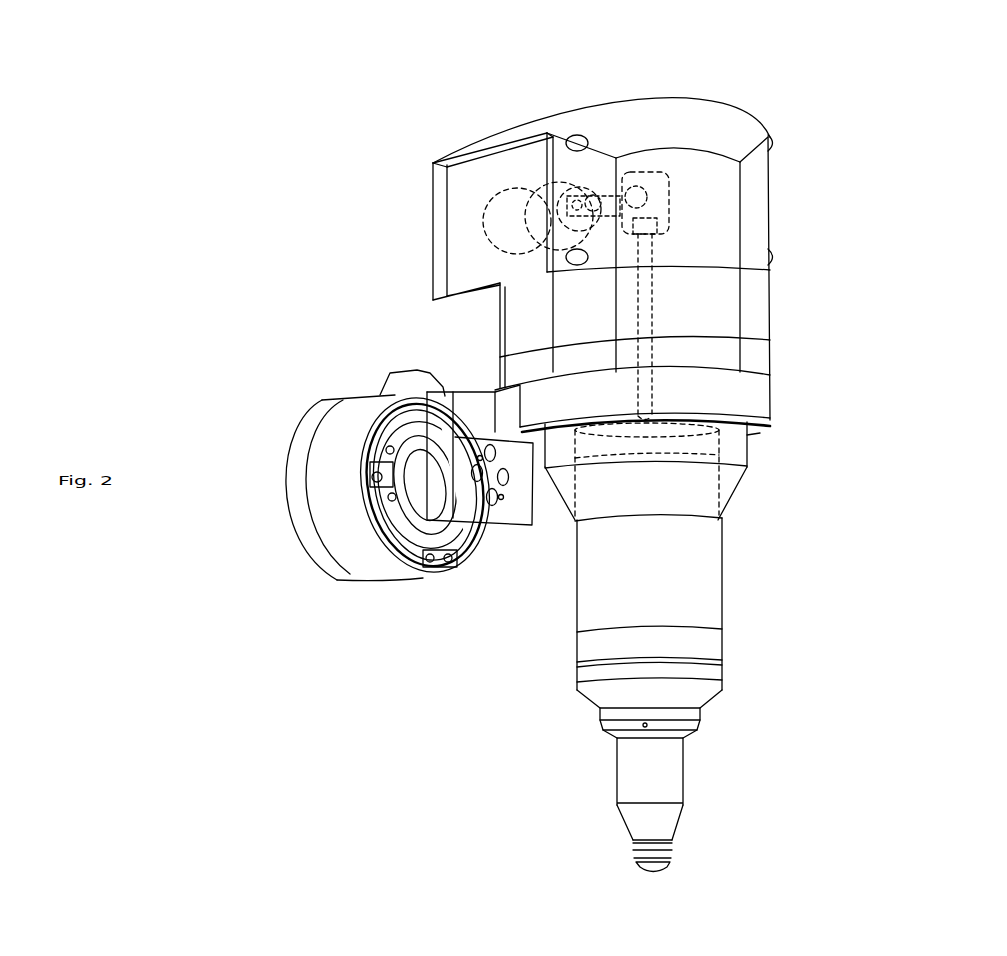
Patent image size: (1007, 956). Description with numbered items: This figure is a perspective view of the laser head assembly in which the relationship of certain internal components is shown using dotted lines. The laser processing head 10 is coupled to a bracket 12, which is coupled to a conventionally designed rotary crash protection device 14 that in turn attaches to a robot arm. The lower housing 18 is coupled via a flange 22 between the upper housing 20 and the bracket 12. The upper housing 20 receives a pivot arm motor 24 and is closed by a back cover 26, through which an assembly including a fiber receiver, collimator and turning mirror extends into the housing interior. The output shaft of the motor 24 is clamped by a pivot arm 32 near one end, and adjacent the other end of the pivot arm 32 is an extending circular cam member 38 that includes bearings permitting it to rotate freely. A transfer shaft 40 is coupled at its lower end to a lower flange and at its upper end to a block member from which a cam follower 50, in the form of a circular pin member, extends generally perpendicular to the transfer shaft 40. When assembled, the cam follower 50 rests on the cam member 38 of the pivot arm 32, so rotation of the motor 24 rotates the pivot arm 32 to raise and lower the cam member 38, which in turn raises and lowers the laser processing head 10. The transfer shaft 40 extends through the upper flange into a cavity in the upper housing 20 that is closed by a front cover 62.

The laser processing head 10 is at (727, 573).
The bracket 12 is at (477, 387).
The rotary crash protection device 14 is at (350, 392).
The lower housing 18 is at (745, 485).
The upper housing 20 is at (548, 125).
The flange 22 is at (753, 360).
The pivot arm motor 24 is at (497, 205).
The back cover 26 is at (437, 247).
The pivot arm 32 is at (617, 190).
The cam member 38 is at (650, 193).
The transfer shaft 40 is at (650, 243).
The cam follower 50 is at (608, 178).
The front cover 62 is at (670, 127).